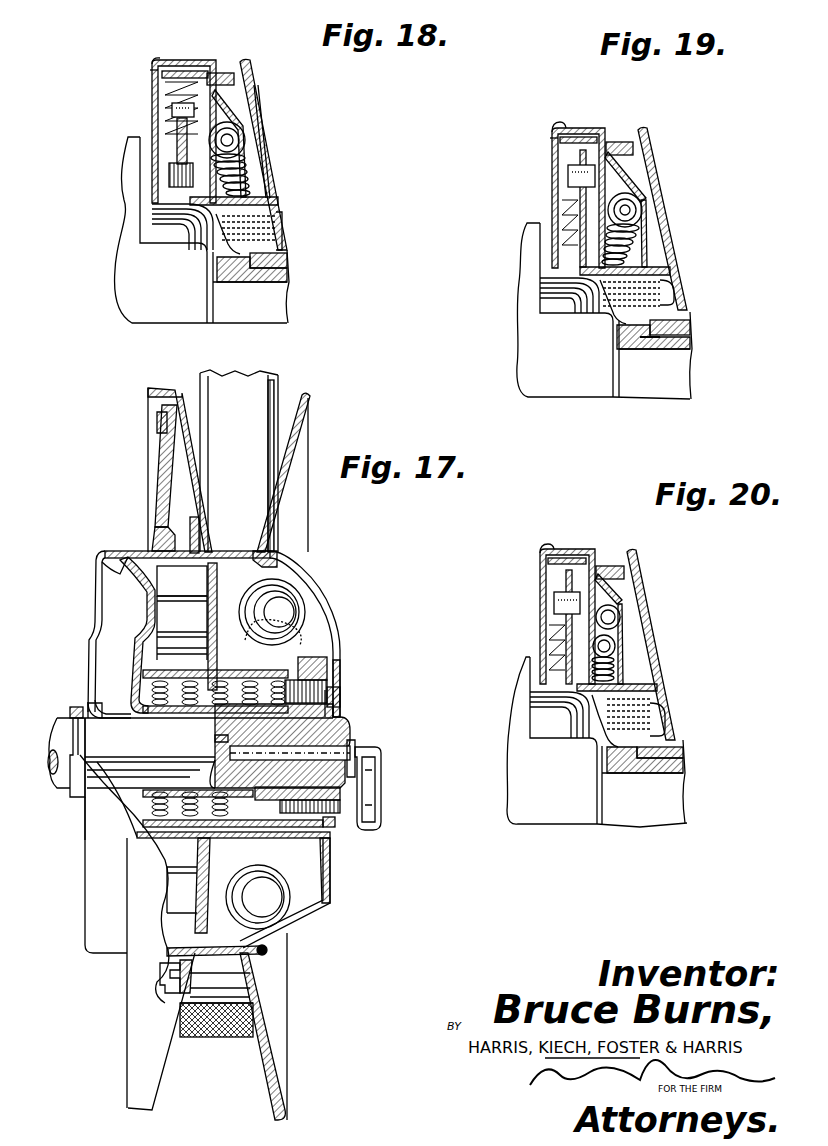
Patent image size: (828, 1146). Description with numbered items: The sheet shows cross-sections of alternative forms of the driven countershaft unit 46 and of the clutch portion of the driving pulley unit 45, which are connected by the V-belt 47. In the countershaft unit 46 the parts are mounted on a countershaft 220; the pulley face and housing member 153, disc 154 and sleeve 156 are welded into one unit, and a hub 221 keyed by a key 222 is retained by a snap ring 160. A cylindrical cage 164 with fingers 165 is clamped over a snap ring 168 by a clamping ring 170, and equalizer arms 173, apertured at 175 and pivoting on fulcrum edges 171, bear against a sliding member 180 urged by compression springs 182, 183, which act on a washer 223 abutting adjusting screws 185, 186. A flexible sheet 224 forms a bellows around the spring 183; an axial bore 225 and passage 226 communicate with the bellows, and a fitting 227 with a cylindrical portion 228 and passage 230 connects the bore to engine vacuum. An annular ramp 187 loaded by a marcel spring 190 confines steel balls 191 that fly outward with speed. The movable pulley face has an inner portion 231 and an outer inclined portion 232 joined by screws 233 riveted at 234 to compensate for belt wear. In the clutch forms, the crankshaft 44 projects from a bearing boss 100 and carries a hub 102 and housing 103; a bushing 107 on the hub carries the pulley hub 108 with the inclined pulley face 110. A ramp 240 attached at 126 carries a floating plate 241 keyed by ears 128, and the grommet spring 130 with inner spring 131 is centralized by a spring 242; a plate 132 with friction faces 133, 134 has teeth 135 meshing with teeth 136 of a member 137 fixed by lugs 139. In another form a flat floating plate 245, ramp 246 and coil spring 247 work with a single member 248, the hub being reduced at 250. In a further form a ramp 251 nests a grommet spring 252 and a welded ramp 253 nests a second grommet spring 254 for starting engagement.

In FIG. 18, the crankshaft 44 is at (268, 286).
In FIG. 19, the crankshaft 44 is at (679, 355).
In FIG. 20, the crankshaft 44 is at (669, 782).
In FIG. 18, the automatic clutch and driving pulley unit 45 is at (98, 115).
In FIG. 19, the automatic clutch and driving pulley unit 45 is at (708, 266).
In FIG. 20, the automatic clutch and driving pulley unit 45 is at (711, 690).
In FIG. 17, the countershaft unit 46 is at (299, 461).
In FIG. 17, the V-belt 47 is at (216, 1021).
In FIG. 18, the bearing boss 100 is at (171, 230).
In FIG. 19, the bearing boss 100 is at (571, 311).
In FIG. 20, the bearing boss 100 is at (567, 742).
In FIG. 18, the hub 102 is at (236, 287).
In FIG. 19, the hub 102 is at (583, 359).
In FIG. 18, the housing 103 is at (156, 131).
In FIG. 19, the housing 103 is at (550, 198).
In FIG. 20, the housing 103 is at (544, 616).
In FIG. 18, the bushing 107 is at (281, 265).
In FIG. 19, the bushing 107 is at (687, 339).
In FIG. 20, the bushing 107 is at (678, 758).
In FIG. 18, the pulley hub 108 is at (296, 240).
In FIG. 19, the pulley hub 108 is at (700, 322).
In FIG. 20, the pulley hub 108 is at (690, 740).
In FIG. 18, the inclined pulley face 110 is at (268, 146).
In FIG. 19, the inclined pulley face 110 is at (667, 217).
In FIG. 20, the inclined pulley face 110 is at (669, 644).
In FIG. 18, the spun attachment 126 is at (141, 45).
In FIG. 18, the fingers or ears 128 is at (234, 58).
In FIG. 19, the fingers or ears 128 is at (642, 126).
In FIG. 20, the fingers or ears 128 is at (646, 560).
In FIG. 18, the grommet spring 130 is at (260, 123).
In FIG. 19, the grommet spring 130 is at (659, 203).
In FIG. 18, the inner spring 131 is at (261, 155).
In FIG. 19, the inner spring 131 is at (660, 233).
In FIG. 18, the annular metal plate 132 is at (185, 83).
In FIG. 18, the friction face 133 is at (204, 44).
In FIG. 19, the friction face 133 is at (597, 121).
In FIG. 20, the friction face 133 is at (594, 544).
In FIG. 18, the friction face 134 is at (128, 67).
In FIG. 19, the friction face 134 is at (530, 134).
In FIG. 20, the friction face 134 is at (569, 533).
In FIG. 18, the teeth 135 is at (126, 142).
In FIG. 18, the teeth 136 is at (125, 175).
In FIG. 18, the member 137 is at (247, 221).
In FIG. 19, the lugs 139 is at (641, 295).
In FIG. 20, the lugs 139 is at (637, 715).
In FIG. 17, the pulley face and housing member 153 is at (313, 756).
In FIG. 17, the disc 154 is at (263, 890).
In FIG. 17, the sleeve 156 is at (137, 932).
In FIG. 17, the snap ring 160 is at (363, 702).
In FIG. 17, the cylindrical cage 164 is at (72, 631).
In FIG. 17, the fingers 165 is at (265, 728).
In FIG. 17, the snap ring 168 is at (231, 527).
In FIG. 17, the clamping ring 170 is at (308, 548).
In FIG. 17, the fulcrum edges 171 is at (87, 572).
In FIG. 17, the equalizer arms 173 is at (138, 466).
In FIG. 17, the aperture 175 is at (130, 606).
In FIG. 17, the member 180 is at (75, 888).
In FIG. 17, the compression spring 182 is at (84, 682).
In FIG. 17, the compression spring 183 is at (120, 632).
In FIG. 17, the adjusting screw 185 is at (344, 658).
In FIG. 17, the adjusting screw 186 is at (365, 833).
In FIG. 17, the annular ramp 187 is at (333, 634).
In FIG. 17, the marcel spring 190 is at (305, 600).
In FIG. 17, the steel balls 191 is at (308, 764).
In FIG. 17, the countershaft 220 is at (207, 770).
In FIG. 17, the hub 221 is at (341, 682).
In FIG. 17, the key 222 is at (294, 807).
In FIG. 17, the washer 223 is at (282, 746).
In FIG. 17, the cylindrical sheet 224 is at (215, 675).
In FIG. 17, the axial bore 225 is at (153, 767).
In FIG. 17, the passage 226 is at (196, 737).
In FIG. 17, the fitting 227 is at (399, 787).
In FIG. 17, the cylindrical portion 228 is at (385, 752).
In FIG. 17, the passage 230 is at (397, 788).
In FIG. 17, the inner portion 231 is at (182, 581).
In FIG. 17, the outer inclined portion 232 is at (201, 470).
In FIG. 17, the screws 233 is at (124, 978).
In FIG. 17, the rivet connection 234 is at (269, 976).
In FIG. 18, the ramp 240 is at (286, 141).
In FIG. 18, the floating plate 241 is at (254, 184).
In FIG. 18, the spring 242 is at (259, 132).
In FIG. 19, the flat floating plate 245 is at (656, 176).
In FIG. 20, the flat floating plate 245 is at (528, 627).
In FIG. 19, the ramp 246 is at (685, 233).
In FIG. 19, the coil spring 247 is at (574, 110).
In FIG. 19, the single member 248 is at (544, 208).
In FIG. 20, the single member 248 is at (526, 631).
In FIG. 19, the reduced portion 250 is at (653, 360).
In FIG. 20, the ramp 251 is at (652, 585).
In FIG. 20, the grommet spring 252 is at (656, 620).
In FIG. 20, the ramp 253 is at (661, 644).
In FIG. 20, the grommet spring 254 is at (655, 646).